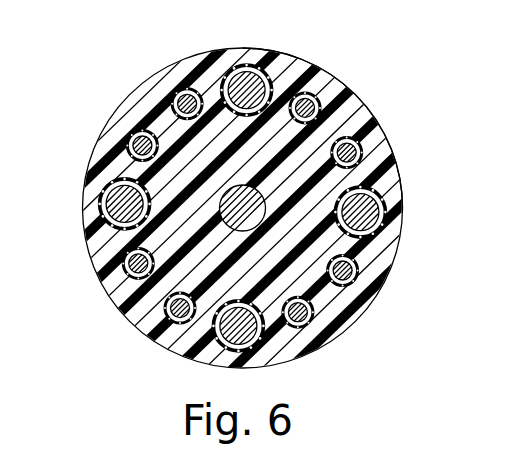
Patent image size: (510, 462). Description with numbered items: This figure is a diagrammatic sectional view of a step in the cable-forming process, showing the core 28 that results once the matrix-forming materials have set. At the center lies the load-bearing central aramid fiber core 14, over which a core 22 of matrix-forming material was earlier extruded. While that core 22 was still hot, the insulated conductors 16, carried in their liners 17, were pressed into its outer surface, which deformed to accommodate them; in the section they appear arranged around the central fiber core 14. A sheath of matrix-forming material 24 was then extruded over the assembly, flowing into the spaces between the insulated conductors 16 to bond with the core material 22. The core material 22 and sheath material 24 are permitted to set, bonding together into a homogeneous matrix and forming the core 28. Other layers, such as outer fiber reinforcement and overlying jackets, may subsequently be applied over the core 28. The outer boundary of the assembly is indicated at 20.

The load-bearing central aramid fiber core 14 is at (245, 203).
The insulated conductors 16 is at (122, 206).
The liners 17 is at (104, 227).
The outer jacket 20 is at (127, 320).
The core of matrix-forming material 22 is at (255, 210).
The sheath of matrix-forming material 24 is at (377, 157).
The core 28 is at (327, 73).